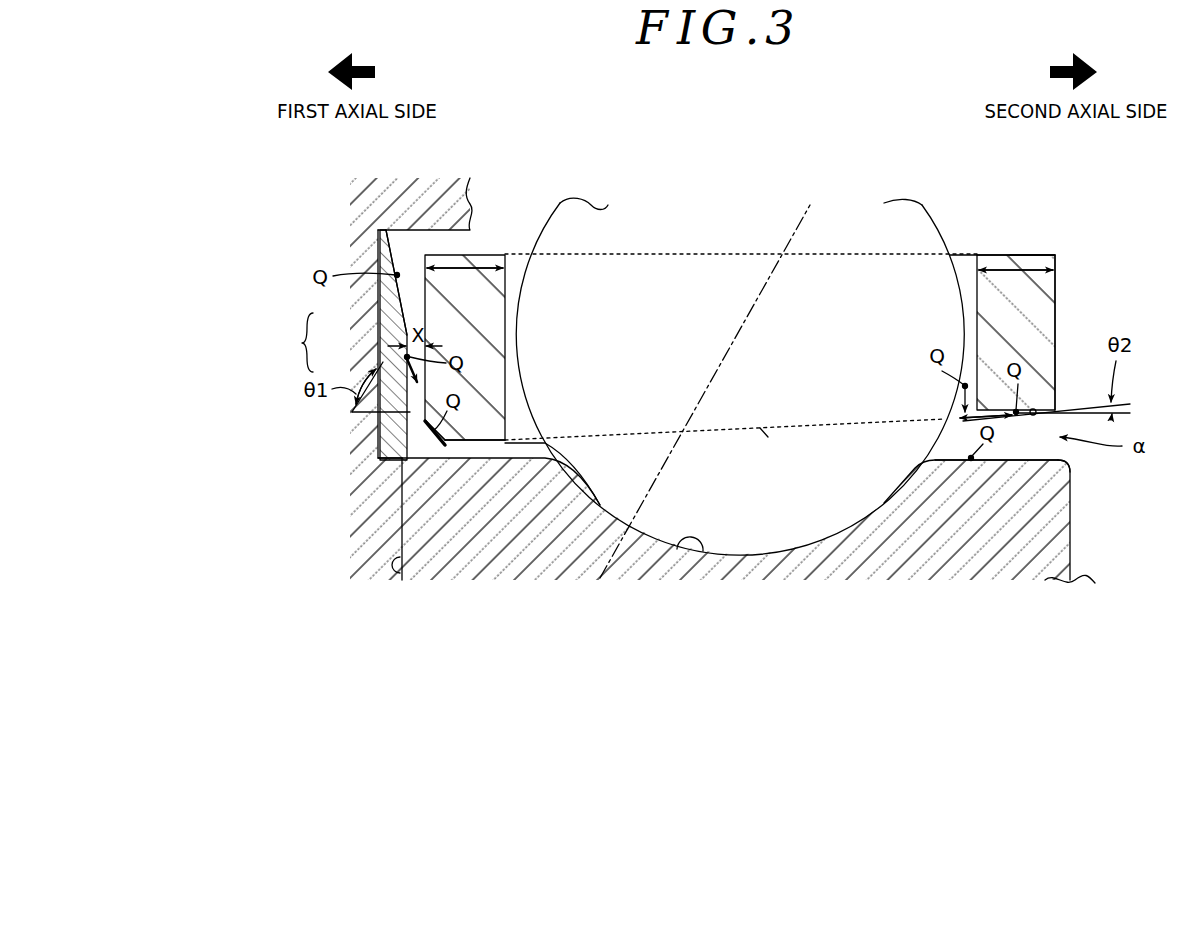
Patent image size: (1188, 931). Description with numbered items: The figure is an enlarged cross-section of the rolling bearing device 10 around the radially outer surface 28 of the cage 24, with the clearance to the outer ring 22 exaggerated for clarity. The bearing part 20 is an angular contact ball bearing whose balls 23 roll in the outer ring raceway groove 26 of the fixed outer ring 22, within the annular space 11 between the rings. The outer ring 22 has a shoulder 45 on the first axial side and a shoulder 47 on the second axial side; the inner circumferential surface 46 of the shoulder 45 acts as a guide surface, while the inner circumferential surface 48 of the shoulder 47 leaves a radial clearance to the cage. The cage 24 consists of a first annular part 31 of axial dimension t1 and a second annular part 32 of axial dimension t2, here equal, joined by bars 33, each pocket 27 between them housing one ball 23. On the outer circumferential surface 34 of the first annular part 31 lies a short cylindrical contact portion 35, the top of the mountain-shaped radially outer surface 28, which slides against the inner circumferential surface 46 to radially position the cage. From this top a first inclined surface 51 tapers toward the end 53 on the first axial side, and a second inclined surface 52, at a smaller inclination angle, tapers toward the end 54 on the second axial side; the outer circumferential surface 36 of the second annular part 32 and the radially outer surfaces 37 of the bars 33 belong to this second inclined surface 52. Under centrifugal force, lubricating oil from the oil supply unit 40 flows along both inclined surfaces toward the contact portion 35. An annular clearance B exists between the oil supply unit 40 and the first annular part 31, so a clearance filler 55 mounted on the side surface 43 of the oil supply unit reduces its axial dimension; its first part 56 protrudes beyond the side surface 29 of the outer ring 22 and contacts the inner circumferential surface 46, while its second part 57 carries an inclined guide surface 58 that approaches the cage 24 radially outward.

The rolling bearing device 10 is at (350, 558).
The annular space 11 is at (1073, 287).
The bearing part 20 is at (1080, 257).
The outer ring 22 is at (1053, 517).
The balls 23 is at (822, 530).
The cage 24 is at (1041, 252).
The outer ring raceway groove 26 is at (679, 548).
The pocket 27 is at (964, 255).
The radially outer surface 28 is at (532, 451).
The side surface 29 is at (396, 574).
The first annular part 31 is at (490, 300).
The second annular part 32 is at (1043, 315).
The bars 33 is at (683, 252).
The outer circumferential surface 34 is at (470, 460).
The contact portion 35 is at (449, 447).
The outer circumferential surface 36 is at (1032, 408).
The radially outer surfaces 37 is at (846, 425).
The oil supply unit 40 is at (390, 247).
The side surface 43 is at (386, 302).
The shoulder 45 is at (423, 473).
The inner circumferential surface 46 is at (490, 449).
The shoulder 47 is at (1032, 487).
The inner circumferential surface 48 is at (1030, 458).
The first inclined surface 51 is at (404, 478).
The second inclined surface 52 is at (762, 432).
The end 53 is at (380, 412).
The end 54 is at (1050, 408).
The clearance filler 55 is at (296, 342).
The first part 56 is at (378, 360).
The second part 57 is at (378, 345).
The inclined guide surface 58 is at (413, 286).
The annular clearance B is at (418, 243).
The axial dimension of the first annular part t1 is at (465, 282).
The axial dimension of the second annular part t2 is at (1016, 283).